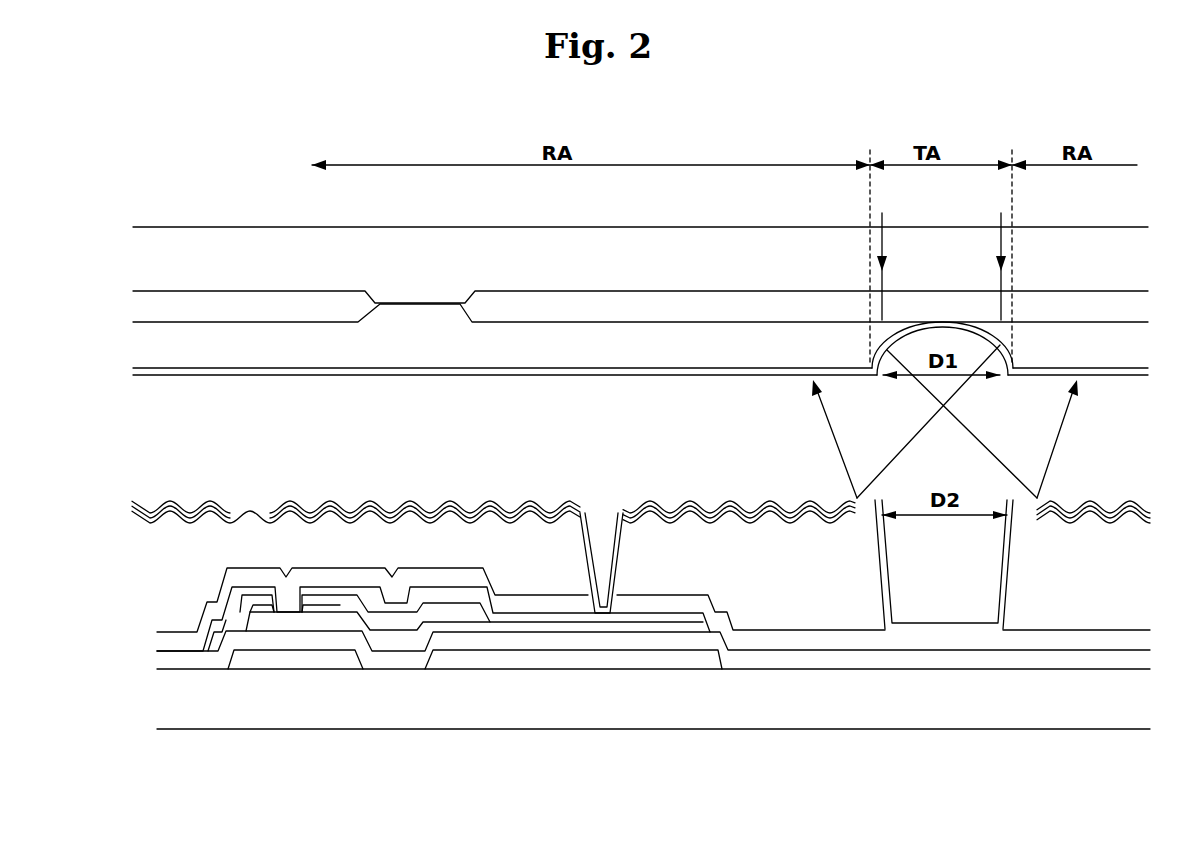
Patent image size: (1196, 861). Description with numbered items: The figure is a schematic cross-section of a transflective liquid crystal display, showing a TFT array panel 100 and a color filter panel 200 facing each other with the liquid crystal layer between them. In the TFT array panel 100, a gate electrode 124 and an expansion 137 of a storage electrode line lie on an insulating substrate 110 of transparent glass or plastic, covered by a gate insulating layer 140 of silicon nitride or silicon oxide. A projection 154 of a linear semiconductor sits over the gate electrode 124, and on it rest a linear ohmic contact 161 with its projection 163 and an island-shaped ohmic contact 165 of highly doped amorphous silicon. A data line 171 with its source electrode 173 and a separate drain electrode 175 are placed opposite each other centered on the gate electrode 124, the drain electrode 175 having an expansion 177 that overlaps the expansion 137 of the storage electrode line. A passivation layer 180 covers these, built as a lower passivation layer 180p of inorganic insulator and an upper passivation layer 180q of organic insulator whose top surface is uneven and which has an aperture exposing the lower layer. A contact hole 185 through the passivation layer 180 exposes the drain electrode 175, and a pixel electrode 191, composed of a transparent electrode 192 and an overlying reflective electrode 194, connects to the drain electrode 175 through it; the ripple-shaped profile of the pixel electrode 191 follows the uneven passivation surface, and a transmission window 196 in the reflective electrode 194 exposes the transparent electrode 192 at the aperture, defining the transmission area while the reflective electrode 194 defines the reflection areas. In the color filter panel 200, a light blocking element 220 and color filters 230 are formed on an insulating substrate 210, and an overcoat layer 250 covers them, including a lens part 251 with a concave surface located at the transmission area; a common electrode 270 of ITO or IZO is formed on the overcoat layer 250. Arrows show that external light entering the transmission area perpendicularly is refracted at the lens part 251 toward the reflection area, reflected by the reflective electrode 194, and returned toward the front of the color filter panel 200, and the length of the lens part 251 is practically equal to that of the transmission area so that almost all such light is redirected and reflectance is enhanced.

The TFT array panel 100 is at (601, 619).
The insulating substrate 110 is at (905, 712).
The gate electrode 124 is at (290, 662).
The expansion of storage electrode line 137 is at (635, 663).
The gate insulating layer 140 is at (775, 655).
The projection of semiconductor 154 is at (312, 625).
The linear ohmic contact 161 is at (233, 632).
The projection of linear ohmic contact 163 is at (268, 612).
The island-shaped ohmic contact 165 is at (330, 618).
The data line 171 is at (217, 645).
The source electrode 173 is at (250, 618).
The drain electrode 175 is at (353, 600).
The expansion of drain electrode 177 is at (565, 625).
The passivation layer 180 is at (653, 531).
The lower passivation layer 180p is at (257, 577).
The upper passivation layer 180q is at (215, 454).
The contact hole 185 is at (594, 533).
The pixel electrode 191 is at (643, 467).
The transparent electrode 192 is at (445, 498).
The reflective electrode 194 is at (428, 452).
The transmission window 196 is at (965, 612).
The color filter panel 200 is at (596, 301).
The insulating substrate 210 is at (211, 248).
The light blocking element 220 is at (416, 295).
The color filter 230 is at (508, 312).
The overcoat layer 250 is at (279, 340).
The lens part 251 is at (915, 350).
The common electrode 270 is at (137, 370).